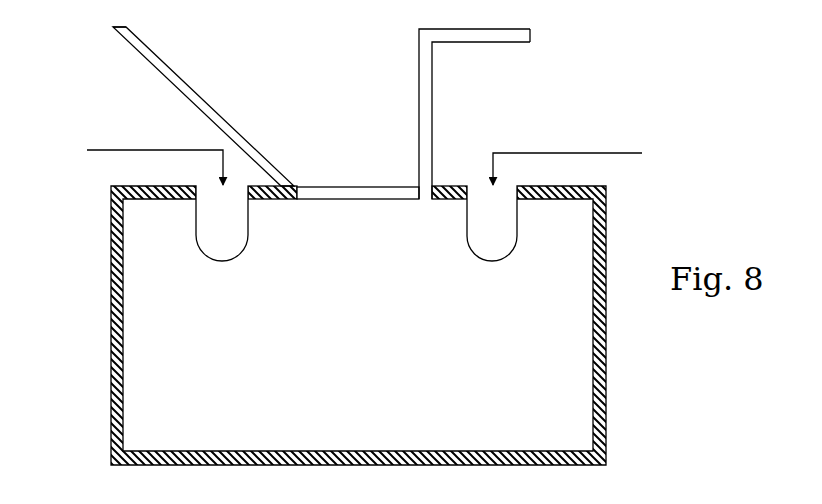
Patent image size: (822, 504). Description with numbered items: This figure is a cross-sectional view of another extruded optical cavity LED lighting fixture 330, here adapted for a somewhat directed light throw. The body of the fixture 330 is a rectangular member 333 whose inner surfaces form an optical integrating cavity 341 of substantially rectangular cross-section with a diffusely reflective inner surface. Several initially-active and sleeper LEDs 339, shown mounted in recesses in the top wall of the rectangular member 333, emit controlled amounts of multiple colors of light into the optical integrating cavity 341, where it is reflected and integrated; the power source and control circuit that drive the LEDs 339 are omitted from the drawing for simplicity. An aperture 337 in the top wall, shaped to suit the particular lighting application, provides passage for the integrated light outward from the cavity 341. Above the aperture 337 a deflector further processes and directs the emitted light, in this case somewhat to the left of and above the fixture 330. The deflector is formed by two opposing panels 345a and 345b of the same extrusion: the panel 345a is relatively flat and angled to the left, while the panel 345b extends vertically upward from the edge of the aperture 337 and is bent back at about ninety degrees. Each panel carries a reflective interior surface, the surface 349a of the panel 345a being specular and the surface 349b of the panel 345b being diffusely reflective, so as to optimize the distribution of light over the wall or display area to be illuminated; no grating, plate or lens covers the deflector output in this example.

The fixture 330 is at (669, 114).
The rectangular member 333 is at (607, 394).
The aperture 337 is at (348, 186).
The LEDs 339 is at (528, 298).
The optical integrating cavity 341 is at (358, 331).
The panel 345a is at (148, 63).
The panel 345b is at (534, 39).
The reflective interior surface 349a is at (178, 75).
The reflective interior surface 349b is at (418, 88).